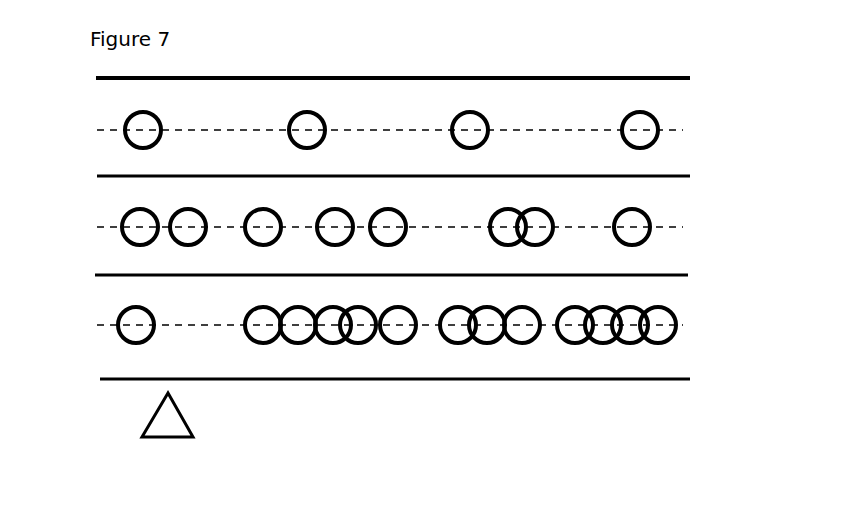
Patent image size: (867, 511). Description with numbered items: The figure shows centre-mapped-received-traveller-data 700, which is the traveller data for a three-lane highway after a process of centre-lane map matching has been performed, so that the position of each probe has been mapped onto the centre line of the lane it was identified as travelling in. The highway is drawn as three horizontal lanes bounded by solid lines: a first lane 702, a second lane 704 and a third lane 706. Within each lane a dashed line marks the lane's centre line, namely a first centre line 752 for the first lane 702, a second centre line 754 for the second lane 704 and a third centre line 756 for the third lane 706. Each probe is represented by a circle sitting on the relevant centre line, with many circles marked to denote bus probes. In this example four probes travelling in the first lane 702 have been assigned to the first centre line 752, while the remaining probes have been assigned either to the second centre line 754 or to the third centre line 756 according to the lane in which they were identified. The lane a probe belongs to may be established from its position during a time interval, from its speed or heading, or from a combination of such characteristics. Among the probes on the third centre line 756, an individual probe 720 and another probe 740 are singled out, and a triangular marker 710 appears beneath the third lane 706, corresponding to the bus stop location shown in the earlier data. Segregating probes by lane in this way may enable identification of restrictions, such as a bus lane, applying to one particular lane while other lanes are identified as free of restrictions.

The centre-mapped-received-traveller-data 700 is at (343, 65).
The first lane 702 is at (395, 124).
The second lane 704 is at (399, 218).
The third lane 706 is at (393, 325).
The load pointer 710 is at (163, 430).
The overlapping resource 720 is at (358, 337).
The unlabeled resource 740 is at (480, 337).
The first centre line 752 is at (95, 132).
The second centre line 754 is at (98, 228).
The third centre line 756 is at (96, 327).